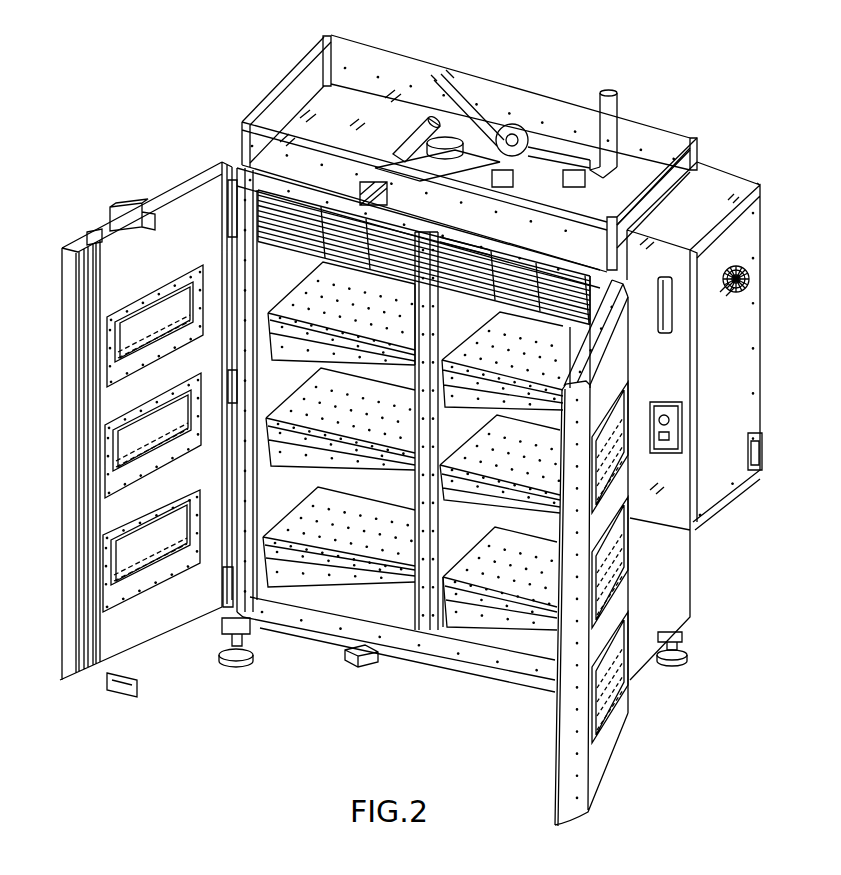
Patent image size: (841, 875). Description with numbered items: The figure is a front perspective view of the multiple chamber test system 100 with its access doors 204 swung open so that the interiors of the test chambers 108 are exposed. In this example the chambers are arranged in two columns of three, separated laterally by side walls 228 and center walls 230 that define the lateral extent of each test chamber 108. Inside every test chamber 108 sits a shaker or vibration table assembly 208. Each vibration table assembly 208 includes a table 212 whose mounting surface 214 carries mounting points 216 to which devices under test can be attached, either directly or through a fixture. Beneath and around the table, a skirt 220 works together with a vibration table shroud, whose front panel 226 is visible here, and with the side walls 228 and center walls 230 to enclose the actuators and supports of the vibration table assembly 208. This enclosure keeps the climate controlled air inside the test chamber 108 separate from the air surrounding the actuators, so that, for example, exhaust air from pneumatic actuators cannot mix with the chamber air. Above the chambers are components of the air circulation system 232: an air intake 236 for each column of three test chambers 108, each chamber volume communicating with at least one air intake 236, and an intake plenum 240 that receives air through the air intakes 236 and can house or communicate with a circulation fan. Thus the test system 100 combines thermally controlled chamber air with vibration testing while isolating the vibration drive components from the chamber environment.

The multiple chamber test system 100 is at (438, 68).
The intake plenum 240 is at (371, 108).
The air intake 236 is at (302, 226).
The air circulation system 232 is at (520, 274).
The test chamber 108 is at (282, 273).
The vibration table assembly 208 is at (333, 317).
The table 212 is at (352, 542).
The mounting surface 214 is at (322, 542).
The center wall 230 is at (412, 542).
The skirt 220 is at (442, 543).
The mounting point 216 is at (487, 583).
The front panel 226 is at (548, 533).
The side wall 228 is at (250, 527).
The access door 204 is at (108, 650).